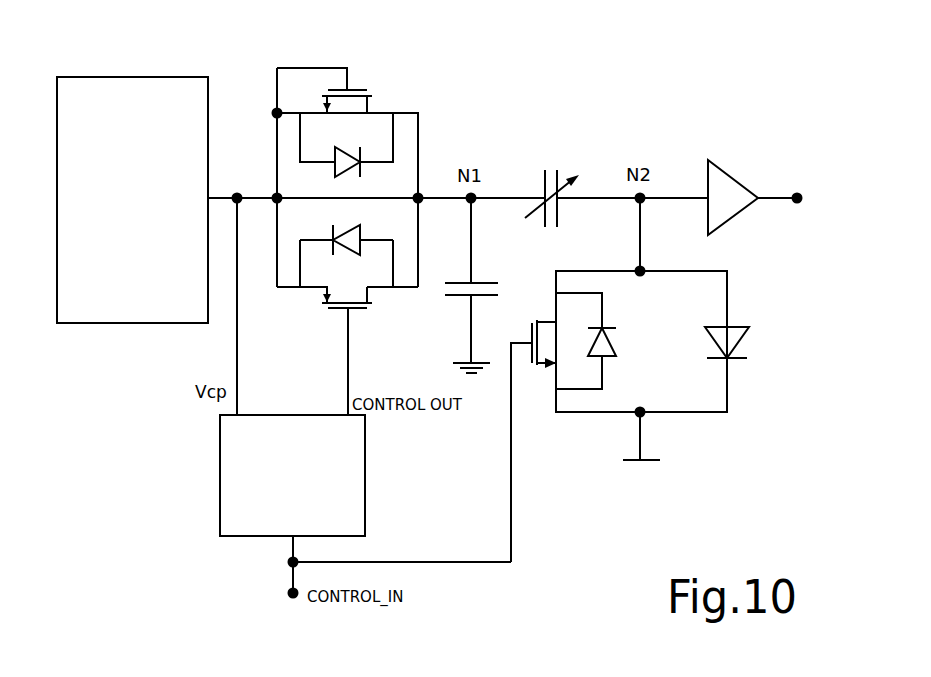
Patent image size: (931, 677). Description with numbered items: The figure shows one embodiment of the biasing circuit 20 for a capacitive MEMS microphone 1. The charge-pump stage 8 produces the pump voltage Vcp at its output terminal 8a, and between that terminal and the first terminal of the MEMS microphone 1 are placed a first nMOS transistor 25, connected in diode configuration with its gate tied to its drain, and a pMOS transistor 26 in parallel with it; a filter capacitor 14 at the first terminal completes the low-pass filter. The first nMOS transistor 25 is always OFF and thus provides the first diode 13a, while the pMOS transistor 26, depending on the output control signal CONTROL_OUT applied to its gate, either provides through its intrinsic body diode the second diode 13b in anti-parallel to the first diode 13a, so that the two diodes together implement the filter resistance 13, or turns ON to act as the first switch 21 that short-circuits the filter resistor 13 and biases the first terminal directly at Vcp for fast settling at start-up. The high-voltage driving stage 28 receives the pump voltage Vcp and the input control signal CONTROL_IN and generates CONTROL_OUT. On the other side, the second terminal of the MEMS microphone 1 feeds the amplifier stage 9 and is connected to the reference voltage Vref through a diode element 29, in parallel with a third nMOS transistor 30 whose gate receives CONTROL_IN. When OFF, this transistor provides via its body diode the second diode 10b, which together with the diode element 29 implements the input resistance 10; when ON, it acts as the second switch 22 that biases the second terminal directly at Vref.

The MEMS microphone 1 is at (553, 168).
The charge-pump stage 8 is at (110, 312).
The output terminal of the charge-pump stage 8a is at (236, 192).
The amplifier stage 9 is at (731, 192).
The input resistance 10 is at (654, 402).
The second diode 10b is at (614, 357).
The filter resistance 13 is at (325, 214).
The first diode 13a is at (345, 171).
The second diode 13b is at (353, 225).
The filter capacitor 14 is at (455, 298).
The biasing circuit 20 is at (681, 136).
The first switch 21 is at (311, 300).
The second switch 22 is at (538, 308).
The first nMOS transistor 25 is at (353, 90).
The pMOS transistor 26 is at (356, 312).
The high-voltage driving stage 28 is at (228, 467).
The diode element 29 is at (740, 325).
The third nMOS transistor 30 is at (529, 370).